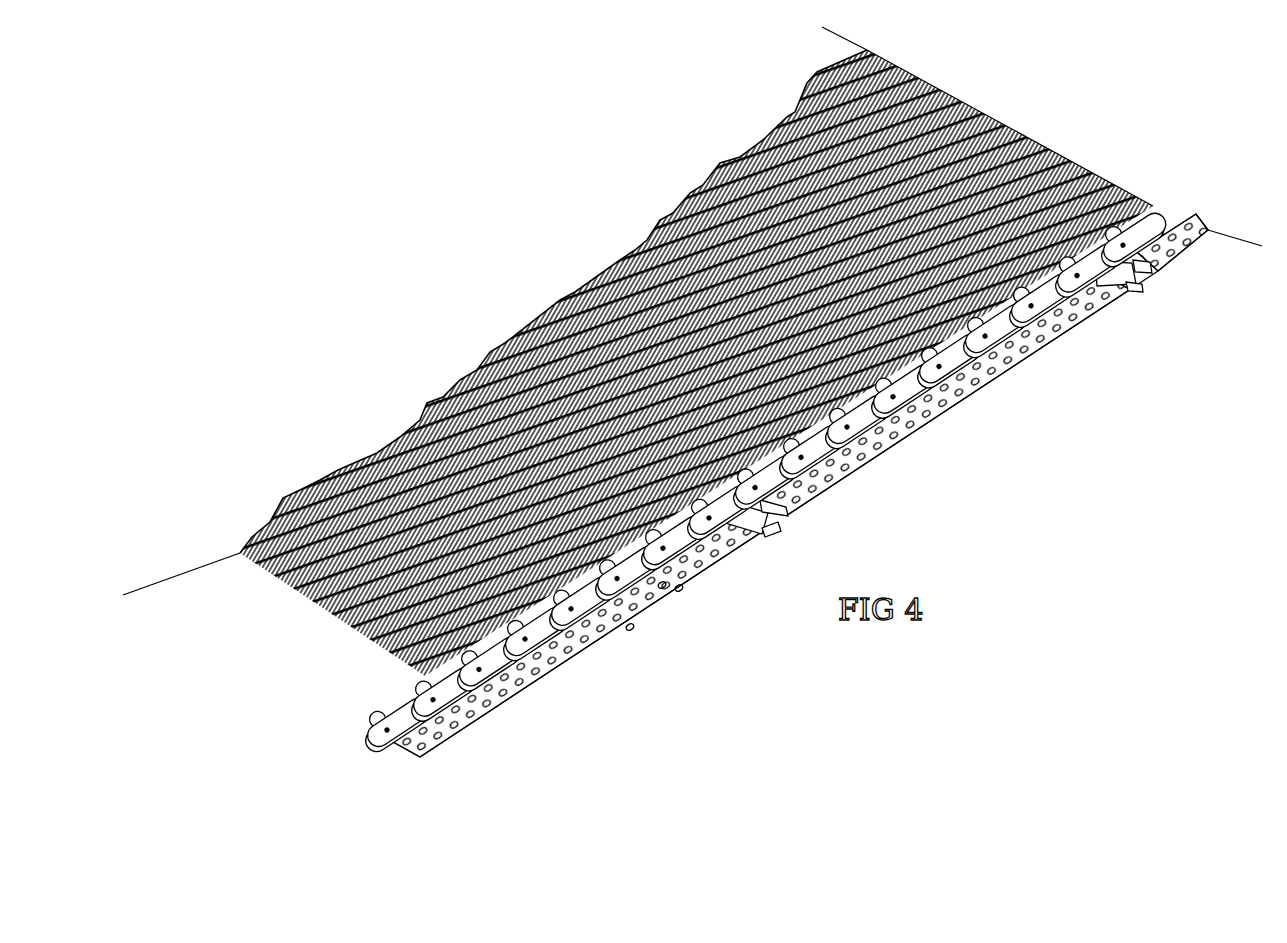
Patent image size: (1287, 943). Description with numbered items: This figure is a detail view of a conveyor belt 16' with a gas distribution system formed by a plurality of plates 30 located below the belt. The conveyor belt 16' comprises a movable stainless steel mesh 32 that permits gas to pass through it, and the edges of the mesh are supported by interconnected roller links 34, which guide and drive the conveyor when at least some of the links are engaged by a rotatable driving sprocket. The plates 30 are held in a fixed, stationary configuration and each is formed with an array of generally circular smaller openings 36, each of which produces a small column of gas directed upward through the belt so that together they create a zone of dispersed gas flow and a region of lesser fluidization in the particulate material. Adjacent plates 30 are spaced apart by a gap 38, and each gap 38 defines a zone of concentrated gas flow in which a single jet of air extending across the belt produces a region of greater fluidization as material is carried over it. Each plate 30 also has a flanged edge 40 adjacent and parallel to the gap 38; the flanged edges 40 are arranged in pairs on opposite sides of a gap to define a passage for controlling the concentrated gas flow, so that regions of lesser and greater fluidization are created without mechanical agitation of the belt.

The conveyor belt 16' is at (696, 363).
The plate 30 is at (1195, 233).
The stainless steel mesh 32 is at (1093, 172).
The roller links 34 is at (966, 350).
The smaller openings 36 is at (678, 591).
The gap 38 is at (1140, 274).
The flanged edge 40 is at (1143, 268).